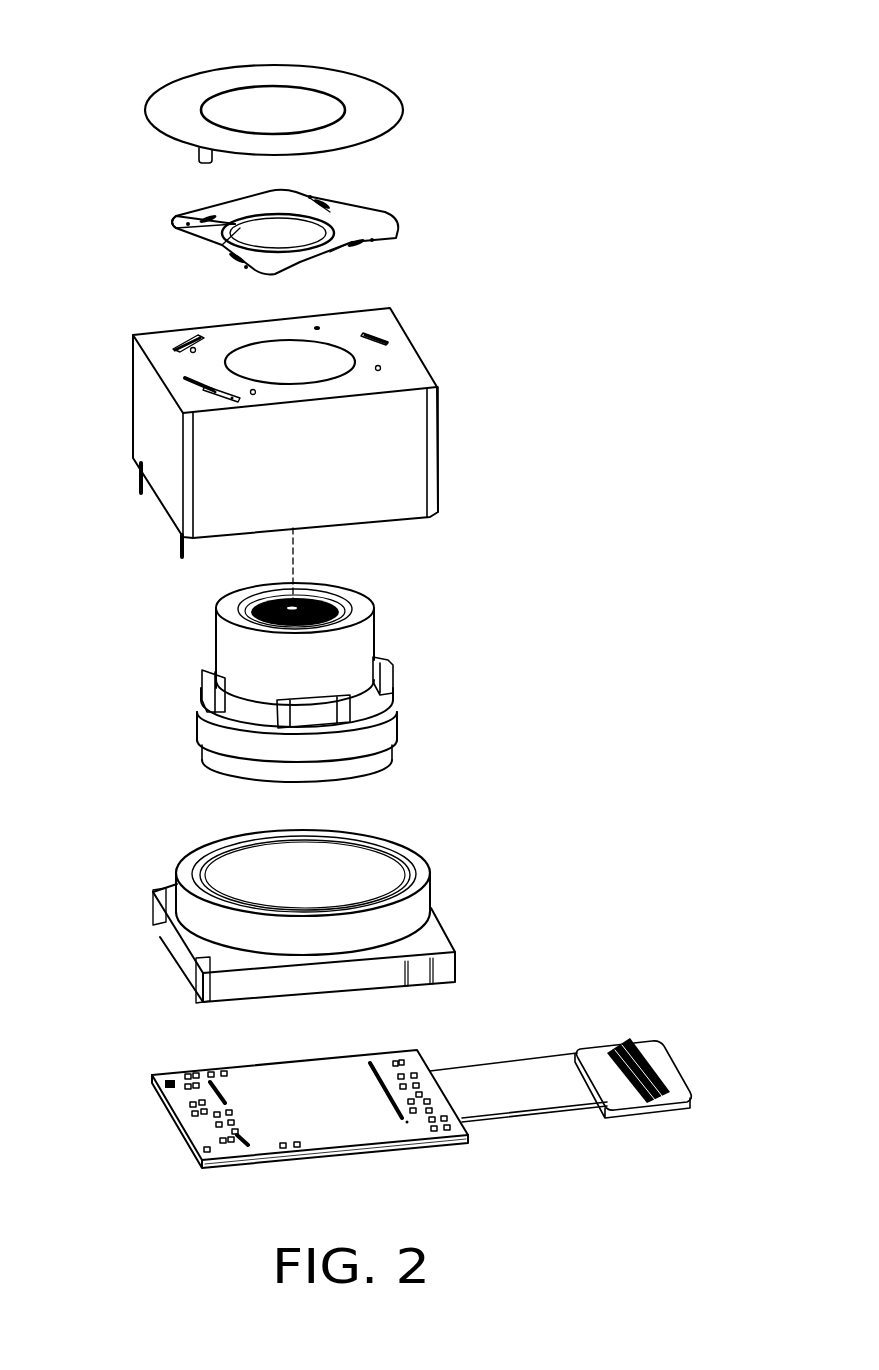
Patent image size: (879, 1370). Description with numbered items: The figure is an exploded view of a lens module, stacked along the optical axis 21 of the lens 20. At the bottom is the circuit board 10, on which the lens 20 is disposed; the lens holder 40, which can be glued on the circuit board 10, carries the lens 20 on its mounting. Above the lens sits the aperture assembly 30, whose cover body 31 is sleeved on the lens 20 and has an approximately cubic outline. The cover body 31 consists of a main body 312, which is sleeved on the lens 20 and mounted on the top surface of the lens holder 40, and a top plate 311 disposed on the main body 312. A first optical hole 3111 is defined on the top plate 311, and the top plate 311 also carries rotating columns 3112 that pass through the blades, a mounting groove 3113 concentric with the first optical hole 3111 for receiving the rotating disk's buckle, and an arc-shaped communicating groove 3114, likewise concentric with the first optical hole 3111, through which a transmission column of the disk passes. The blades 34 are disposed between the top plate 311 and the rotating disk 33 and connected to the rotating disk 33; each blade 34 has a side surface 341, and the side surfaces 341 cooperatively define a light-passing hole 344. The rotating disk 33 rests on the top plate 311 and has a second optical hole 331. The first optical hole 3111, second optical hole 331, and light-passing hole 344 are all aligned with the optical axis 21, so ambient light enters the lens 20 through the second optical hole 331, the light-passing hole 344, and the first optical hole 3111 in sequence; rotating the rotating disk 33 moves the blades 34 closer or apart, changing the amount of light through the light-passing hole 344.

The circuit board 10 is at (250, 1162).
The lens 20 is at (383, 730).
The optical axis 21 is at (293, 553).
The aperture assembly 30 is at (554, 327).
The cover body 31 is at (541, 347).
The top plate 311 is at (413, 368).
The main body 312 is at (418, 412).
The first optical hole 3111 is at (238, 351).
The rotating column 3112 is at (319, 325).
The mounting groove 3113 is at (443, 333).
The communicating groove 3114 is at (198, 397).
The rotating disk 33 is at (390, 107).
The second optical hole 331 is at (214, 112).
The blade 34 is at (375, 222).
The side surface 341 is at (300, 221).
The light-passing hole 344 is at (229, 235).
The lens holder 40 is at (443, 965).